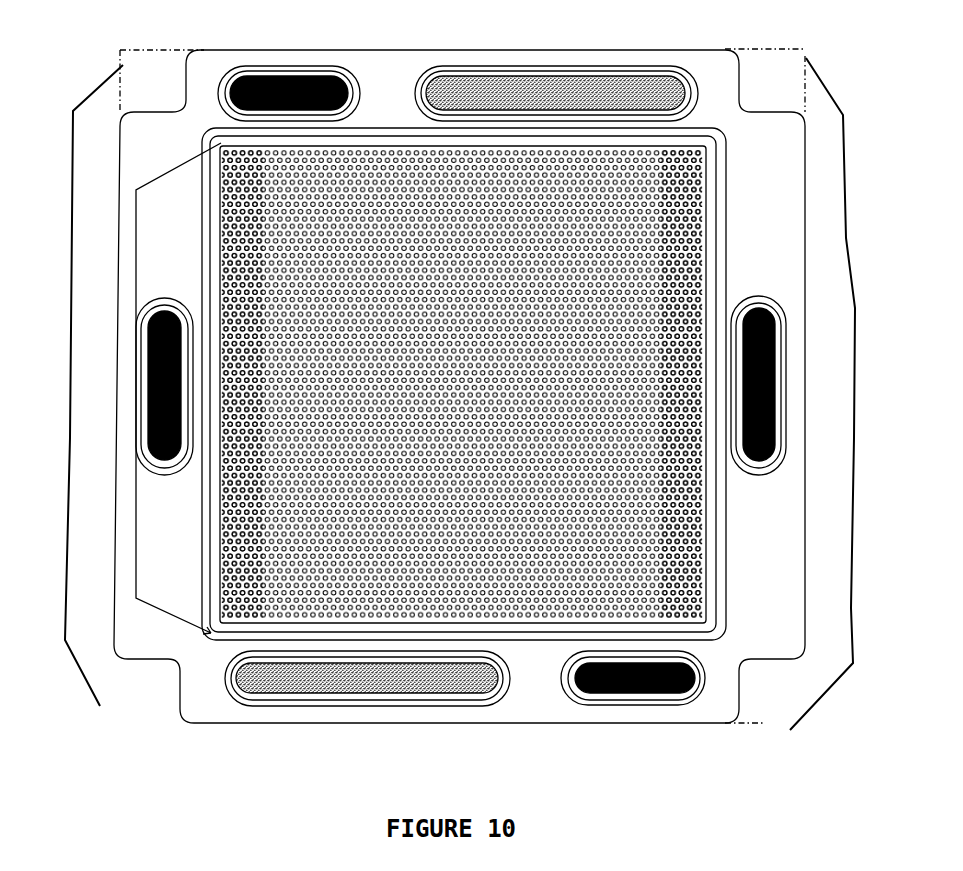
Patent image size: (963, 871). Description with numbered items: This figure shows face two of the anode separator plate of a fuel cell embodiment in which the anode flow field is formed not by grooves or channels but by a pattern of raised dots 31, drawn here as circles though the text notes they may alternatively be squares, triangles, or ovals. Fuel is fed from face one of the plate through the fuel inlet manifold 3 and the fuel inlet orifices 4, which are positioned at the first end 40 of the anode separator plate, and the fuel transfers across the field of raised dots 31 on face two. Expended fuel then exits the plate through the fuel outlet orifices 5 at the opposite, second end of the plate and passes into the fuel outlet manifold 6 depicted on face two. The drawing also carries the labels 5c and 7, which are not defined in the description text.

The fuel inlet manifold 3 is at (140, 428).
The fuel inlet orifices 4 is at (215, 220).
The fuel outlet orifices 5 is at (695, 225).
The outer boundary line 5c is at (847, 301).
The fuel outlet manifold 6 is at (765, 378).
The ring trace 7 is at (125, 390).
The raised dots 31 is at (340, 600).
The first end 40 is at (71, 385).